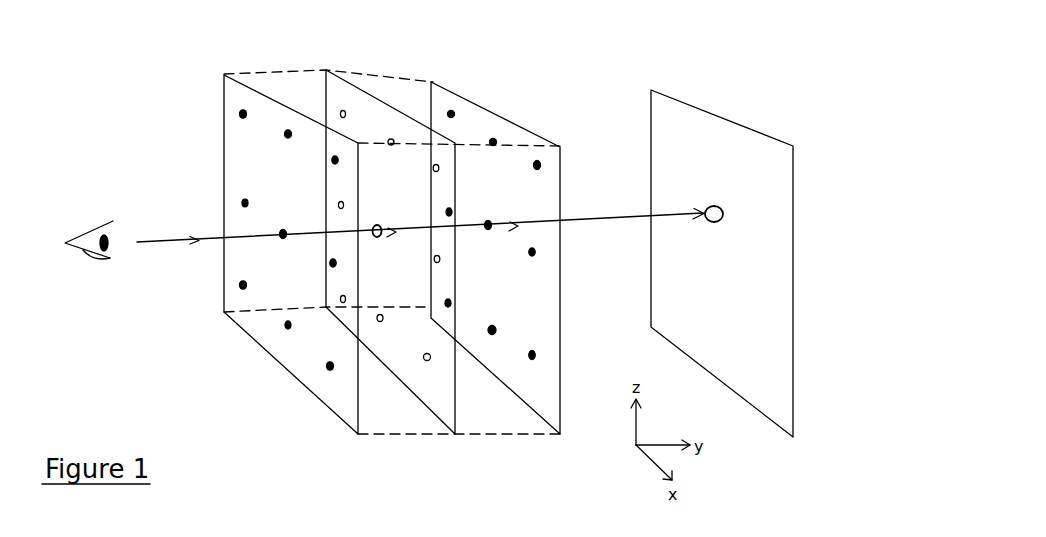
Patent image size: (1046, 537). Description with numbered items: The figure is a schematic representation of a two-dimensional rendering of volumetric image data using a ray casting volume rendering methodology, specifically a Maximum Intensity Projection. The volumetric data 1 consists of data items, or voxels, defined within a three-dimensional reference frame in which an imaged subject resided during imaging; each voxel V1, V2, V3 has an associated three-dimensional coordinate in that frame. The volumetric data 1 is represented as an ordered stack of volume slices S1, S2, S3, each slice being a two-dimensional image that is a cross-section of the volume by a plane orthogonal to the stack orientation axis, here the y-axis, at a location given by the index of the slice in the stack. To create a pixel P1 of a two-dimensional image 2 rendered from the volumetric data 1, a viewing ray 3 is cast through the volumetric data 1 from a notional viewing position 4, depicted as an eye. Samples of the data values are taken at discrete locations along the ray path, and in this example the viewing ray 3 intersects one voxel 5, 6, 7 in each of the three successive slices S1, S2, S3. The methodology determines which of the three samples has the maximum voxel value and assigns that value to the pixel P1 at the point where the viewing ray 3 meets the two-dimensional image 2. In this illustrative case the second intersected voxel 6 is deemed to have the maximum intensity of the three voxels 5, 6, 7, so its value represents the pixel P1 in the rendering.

The volumetric data 1 is at (174, 73).
The 2D image 2 is at (666, 91).
The viewing ray 3 is at (172, 240).
The notional viewing position 4 is at (92, 255).
The voxel 5 is at (284, 232).
The voxel 6 is at (381, 228).
The voxel 7 is at (490, 224).
The voxel V1 is at (237, 283).
The voxel V2 is at (343, 108).
The voxel V3 is at (450, 114).
The volume slice S1 is at (338, 420).
The volume slice S2 is at (460, 420).
The volume slice S3 is at (568, 420).
The pixel P1 is at (724, 207).